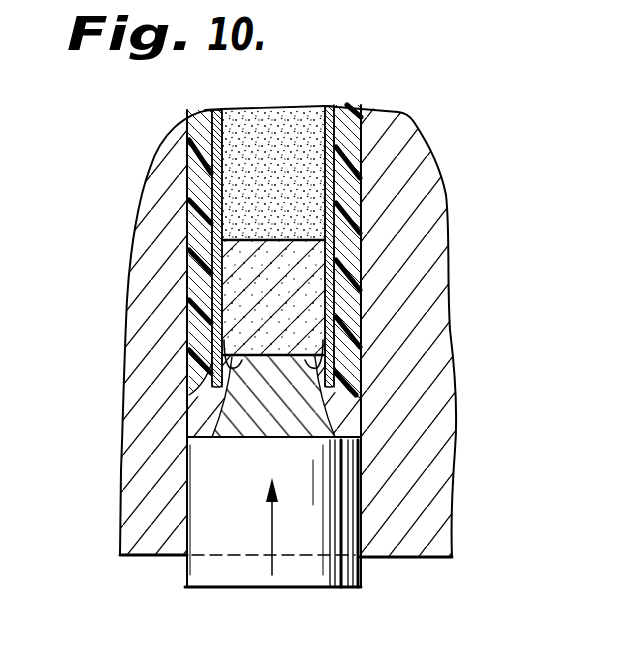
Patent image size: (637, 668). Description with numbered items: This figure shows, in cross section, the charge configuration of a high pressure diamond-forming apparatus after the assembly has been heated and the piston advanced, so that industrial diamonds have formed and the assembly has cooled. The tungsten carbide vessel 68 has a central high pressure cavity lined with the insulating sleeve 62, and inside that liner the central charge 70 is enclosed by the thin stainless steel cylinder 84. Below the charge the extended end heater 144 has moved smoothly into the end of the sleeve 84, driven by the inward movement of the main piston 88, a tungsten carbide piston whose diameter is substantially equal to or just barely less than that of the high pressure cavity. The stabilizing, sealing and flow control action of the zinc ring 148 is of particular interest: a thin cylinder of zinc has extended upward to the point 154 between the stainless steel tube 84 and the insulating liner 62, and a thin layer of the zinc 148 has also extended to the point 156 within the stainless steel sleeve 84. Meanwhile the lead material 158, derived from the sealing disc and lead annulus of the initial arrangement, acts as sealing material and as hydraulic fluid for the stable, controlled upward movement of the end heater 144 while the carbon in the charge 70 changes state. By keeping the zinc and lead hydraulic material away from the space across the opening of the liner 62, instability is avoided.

The insulating sleeve 62 is at (350, 271).
The tungsten carbide vessel 68 is at (158, 490).
The central charge 70 is at (258, 141).
The thin stainless steel cylinder 84 is at (330, 135).
The main piston 88 is at (330, 572).
The extended end heater 144 is at (243, 258).
The zinc ring 148 is at (347, 413).
The point reached by zinc cylinder 154 is at (210, 186).
The point reached by zinc layer 156 is at (318, 360).
The lead material 158 is at (260, 415).